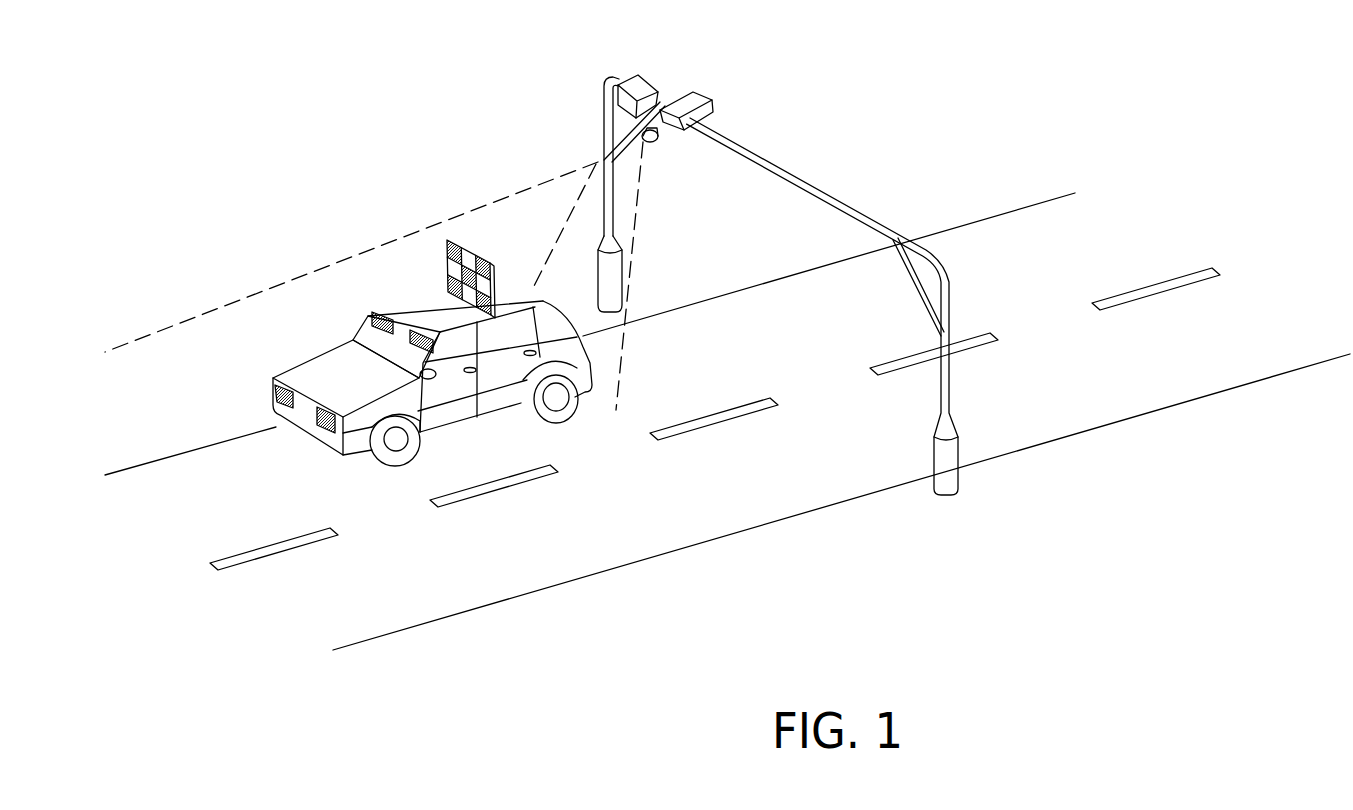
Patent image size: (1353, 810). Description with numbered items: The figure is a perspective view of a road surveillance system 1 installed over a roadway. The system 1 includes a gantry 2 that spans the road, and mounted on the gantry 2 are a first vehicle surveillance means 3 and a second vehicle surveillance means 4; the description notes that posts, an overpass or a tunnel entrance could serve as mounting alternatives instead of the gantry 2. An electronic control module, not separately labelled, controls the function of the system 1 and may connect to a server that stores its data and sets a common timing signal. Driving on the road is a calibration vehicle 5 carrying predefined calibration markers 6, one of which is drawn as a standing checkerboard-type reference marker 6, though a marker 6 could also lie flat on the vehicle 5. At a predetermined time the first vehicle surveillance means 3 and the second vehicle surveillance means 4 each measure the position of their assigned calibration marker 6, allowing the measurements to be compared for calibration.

The road surveillance system 1 is at (1095, 679).
The gantry 2 is at (795, 166).
The first vehicle surveillance means 3 is at (714, 100).
The second vehicle surveillance means 4 is at (658, 88).
The calibration vehicle 5 is at (540, 437).
The calibration markers 6 is at (278, 397).